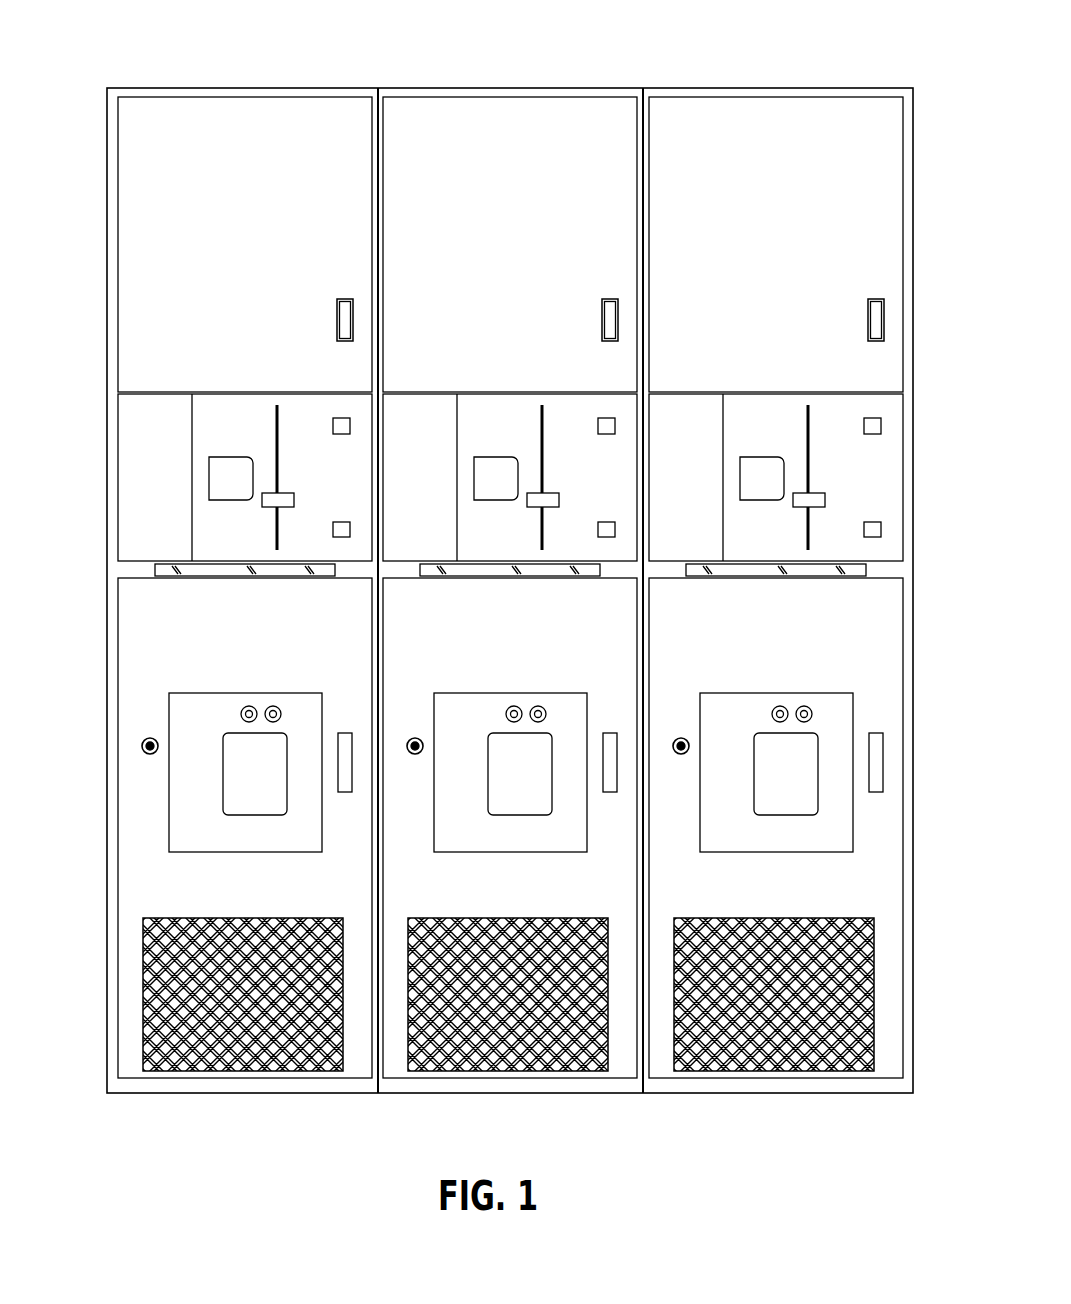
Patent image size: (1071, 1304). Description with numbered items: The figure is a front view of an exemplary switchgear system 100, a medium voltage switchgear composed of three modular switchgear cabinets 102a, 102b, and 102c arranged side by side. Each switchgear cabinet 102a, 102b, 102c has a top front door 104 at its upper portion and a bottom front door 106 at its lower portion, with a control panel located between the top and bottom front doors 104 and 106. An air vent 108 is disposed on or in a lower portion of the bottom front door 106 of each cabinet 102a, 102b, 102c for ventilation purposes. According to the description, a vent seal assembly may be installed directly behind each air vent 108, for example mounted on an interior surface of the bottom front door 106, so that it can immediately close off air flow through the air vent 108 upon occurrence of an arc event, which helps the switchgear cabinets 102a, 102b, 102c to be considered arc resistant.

The switchgear system 100 is at (150, 52).
The switchgear cabinet 102a is at (264, 550).
The switchgear cabinet 102b is at (569, 62).
The switchgear cabinet 102c is at (848, 62).
The top front door 104 is at (118, 250).
The bottom front door 106 is at (118, 720).
The air vent 108 is at (143, 990).